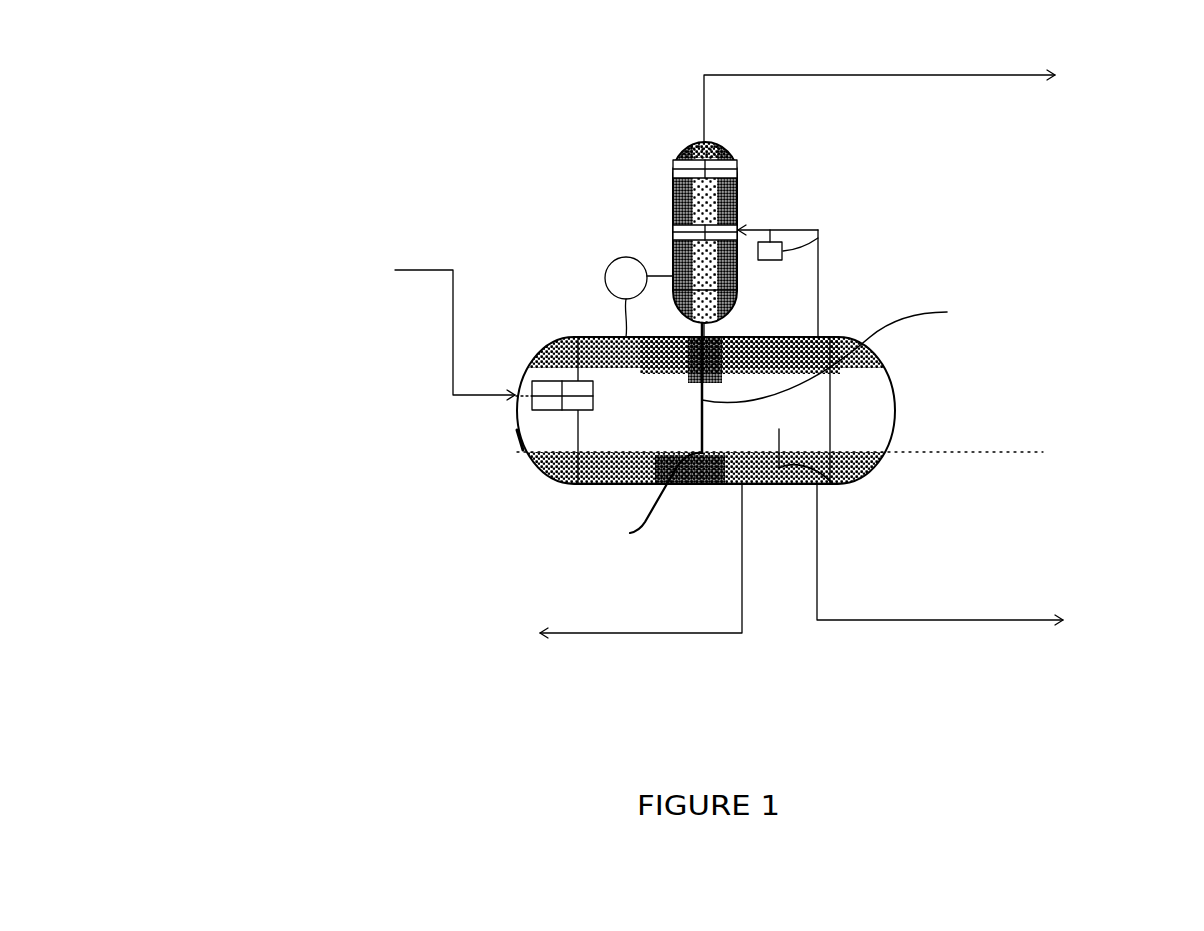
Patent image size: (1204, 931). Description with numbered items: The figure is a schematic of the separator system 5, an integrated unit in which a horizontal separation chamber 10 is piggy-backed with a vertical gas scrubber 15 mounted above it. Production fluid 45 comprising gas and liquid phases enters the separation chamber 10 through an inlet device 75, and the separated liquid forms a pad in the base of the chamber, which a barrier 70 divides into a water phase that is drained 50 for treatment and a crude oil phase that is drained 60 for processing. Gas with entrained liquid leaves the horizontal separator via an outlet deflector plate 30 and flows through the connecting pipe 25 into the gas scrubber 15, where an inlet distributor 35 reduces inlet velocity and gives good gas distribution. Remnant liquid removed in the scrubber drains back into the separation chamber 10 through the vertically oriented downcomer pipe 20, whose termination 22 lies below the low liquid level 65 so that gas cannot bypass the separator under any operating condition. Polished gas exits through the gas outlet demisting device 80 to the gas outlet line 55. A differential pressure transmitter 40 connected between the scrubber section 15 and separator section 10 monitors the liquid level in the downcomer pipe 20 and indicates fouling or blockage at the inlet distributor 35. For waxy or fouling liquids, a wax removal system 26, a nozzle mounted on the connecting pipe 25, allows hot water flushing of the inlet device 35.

The separator system 5 is at (332, 113).
The separation chamber 10 is at (533, 467).
The gas scrubber 15 is at (743, 207).
The downcomer pipe 20 is at (849, 377).
The termination of the downcomer pipe 22 is at (645, 510).
The connecting pipe 25 is at (818, 268).
The wax or fouling matter removal system 26 is at (818, 230).
The outlet deflector plate 30 is at (818, 337).
The inlet distributor 35 is at (672, 234).
The differential pressure transmitter 40 is at (609, 262).
The production fluid 45 is at (441, 330).
The water drain 50 is at (612, 568).
The gas outlet line 55 is at (907, 101).
The crude oil drain 60 is at (973, 560).
The low liquid level 65 is at (1013, 450).
The barrier 70 is at (833, 484).
The inlet device 75 is at (559, 378).
The gas outlet demisting device 80 is at (740, 162).